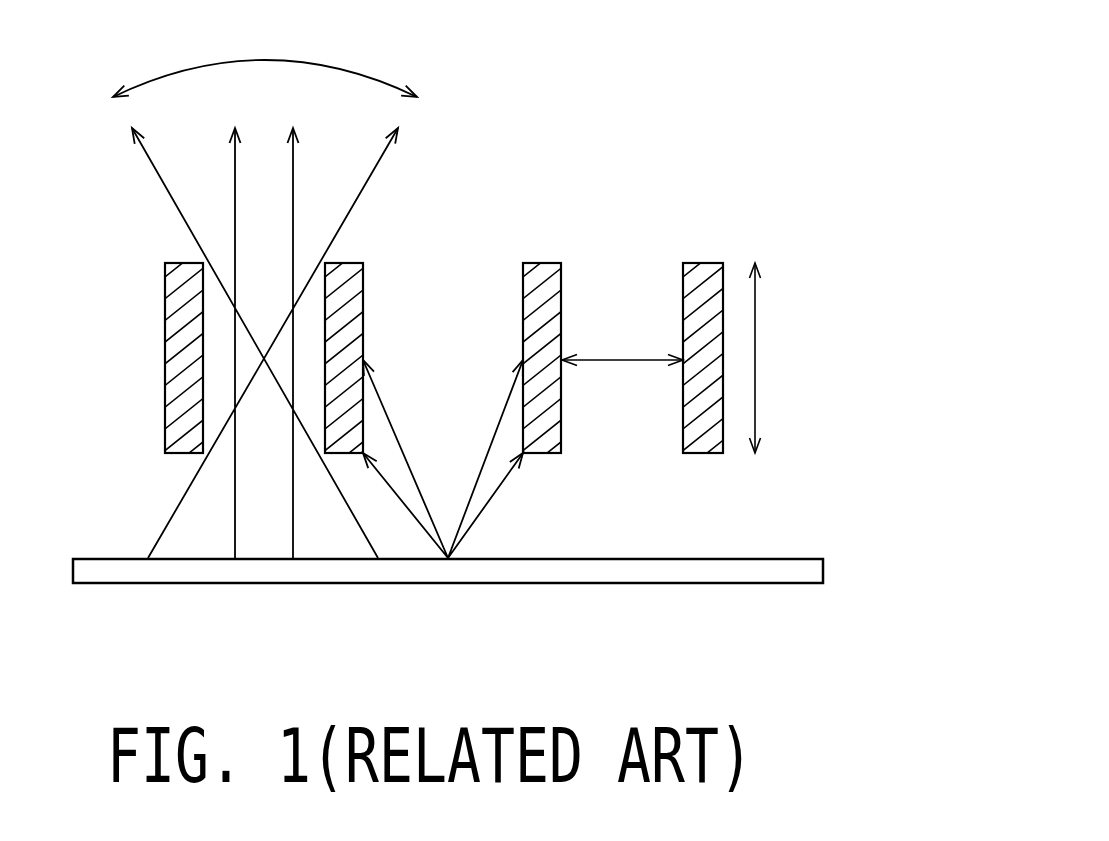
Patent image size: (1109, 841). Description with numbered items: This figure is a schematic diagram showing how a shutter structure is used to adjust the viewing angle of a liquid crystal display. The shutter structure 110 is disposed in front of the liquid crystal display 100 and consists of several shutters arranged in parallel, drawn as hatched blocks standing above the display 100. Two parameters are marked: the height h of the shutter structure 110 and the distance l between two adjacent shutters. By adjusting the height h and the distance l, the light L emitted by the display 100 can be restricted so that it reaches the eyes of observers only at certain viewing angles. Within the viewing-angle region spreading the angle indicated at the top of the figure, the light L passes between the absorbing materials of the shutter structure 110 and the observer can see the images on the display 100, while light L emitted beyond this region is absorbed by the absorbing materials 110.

The shutter structure 110 is at (702, 263).
The liquid crystal display 100 is at (812, 572).
The light L is at (327, 344).
The height of the shutter structure h is at (772, 358).
The distance between two adjacent shutters l is at (622, 340).